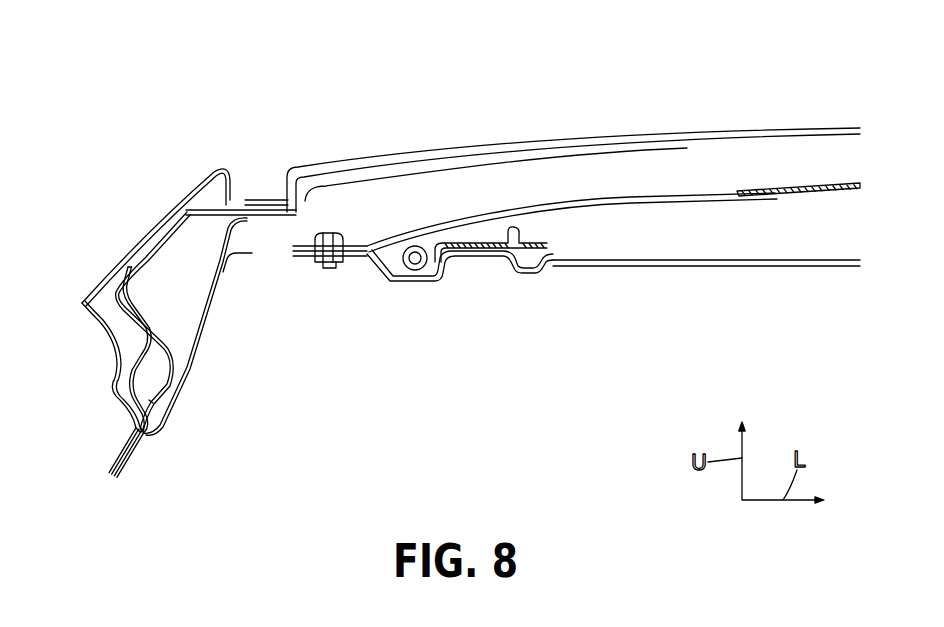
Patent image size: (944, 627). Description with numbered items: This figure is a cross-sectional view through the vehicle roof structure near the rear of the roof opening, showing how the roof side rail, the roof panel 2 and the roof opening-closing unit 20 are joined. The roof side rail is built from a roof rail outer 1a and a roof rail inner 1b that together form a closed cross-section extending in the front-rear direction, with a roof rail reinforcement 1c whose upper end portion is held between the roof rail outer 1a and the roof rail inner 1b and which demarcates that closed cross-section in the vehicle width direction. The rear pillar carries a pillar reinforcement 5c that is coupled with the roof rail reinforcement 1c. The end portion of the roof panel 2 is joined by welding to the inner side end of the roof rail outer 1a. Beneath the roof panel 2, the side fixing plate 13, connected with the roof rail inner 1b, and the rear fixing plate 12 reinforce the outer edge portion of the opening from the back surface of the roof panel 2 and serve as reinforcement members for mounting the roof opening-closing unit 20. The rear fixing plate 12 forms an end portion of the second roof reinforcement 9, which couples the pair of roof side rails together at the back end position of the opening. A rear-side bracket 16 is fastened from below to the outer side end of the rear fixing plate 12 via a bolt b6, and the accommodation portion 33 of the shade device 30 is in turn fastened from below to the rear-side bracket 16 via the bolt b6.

The roof panel 2 is at (727, 124).
The side fixing plate 13 is at (440, 168).
The roof rail outer 1a is at (93, 283).
The roof rail reinforcement 1c is at (147, 257).
The pillar reinforcement 5c is at (127, 377).
The roof rail inner 1b is at (180, 377).
The rear-side bracket 16 is at (238, 262).
The bolt b6 is at (323, 267).
The rear fixing plate 12 is at (630, 200).
The second roof reinforcement 9 is at (808, 201).
The accommodation portion 33 is at (685, 270).
The shade device 30 is at (706, 306).
The roof opening-closing unit 20 is at (533, 284).